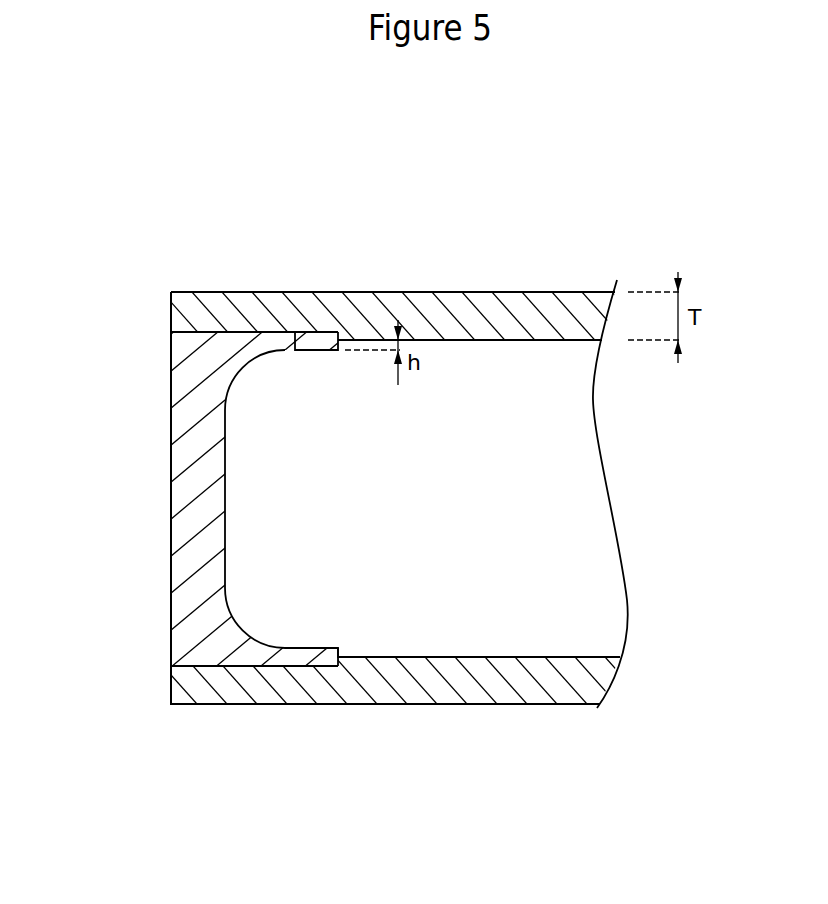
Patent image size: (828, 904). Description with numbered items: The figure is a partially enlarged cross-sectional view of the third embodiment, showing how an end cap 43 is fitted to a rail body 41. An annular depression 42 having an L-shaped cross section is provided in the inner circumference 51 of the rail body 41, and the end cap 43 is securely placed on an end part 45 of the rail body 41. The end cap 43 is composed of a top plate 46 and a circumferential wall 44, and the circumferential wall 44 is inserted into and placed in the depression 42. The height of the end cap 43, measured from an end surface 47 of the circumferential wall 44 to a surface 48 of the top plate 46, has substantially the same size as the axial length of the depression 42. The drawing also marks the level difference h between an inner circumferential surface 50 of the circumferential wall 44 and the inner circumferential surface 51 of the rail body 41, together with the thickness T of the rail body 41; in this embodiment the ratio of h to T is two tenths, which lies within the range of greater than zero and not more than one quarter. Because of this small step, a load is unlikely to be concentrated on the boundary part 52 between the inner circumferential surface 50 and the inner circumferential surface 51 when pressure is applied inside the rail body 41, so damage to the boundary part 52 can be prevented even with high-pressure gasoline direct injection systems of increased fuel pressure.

The rail body 41 is at (512, 288).
The depression 42 is at (298, 330).
The end cap 43 is at (152, 480).
The circumferential wall 44 is at (282, 662).
The end part 45 is at (200, 292).
The top plate 46 is at (171, 538).
The end surface 47 is at (338, 657).
The surface 48 is at (171, 642).
The inner circumferential surface of the circumferential wall 50 is at (338, 657).
The inner circumferential surface of the rail body 51 is at (550, 672).
The boundary part 52 is at (338, 657).